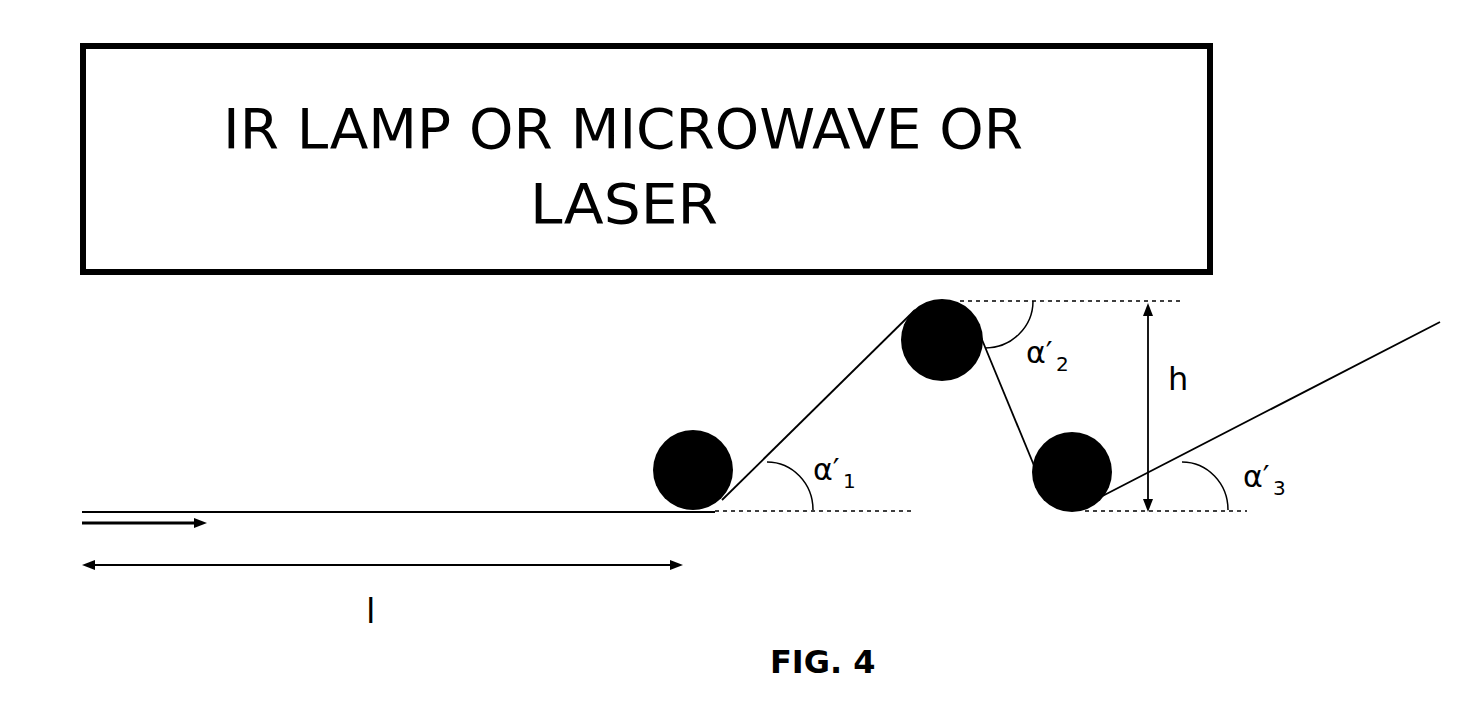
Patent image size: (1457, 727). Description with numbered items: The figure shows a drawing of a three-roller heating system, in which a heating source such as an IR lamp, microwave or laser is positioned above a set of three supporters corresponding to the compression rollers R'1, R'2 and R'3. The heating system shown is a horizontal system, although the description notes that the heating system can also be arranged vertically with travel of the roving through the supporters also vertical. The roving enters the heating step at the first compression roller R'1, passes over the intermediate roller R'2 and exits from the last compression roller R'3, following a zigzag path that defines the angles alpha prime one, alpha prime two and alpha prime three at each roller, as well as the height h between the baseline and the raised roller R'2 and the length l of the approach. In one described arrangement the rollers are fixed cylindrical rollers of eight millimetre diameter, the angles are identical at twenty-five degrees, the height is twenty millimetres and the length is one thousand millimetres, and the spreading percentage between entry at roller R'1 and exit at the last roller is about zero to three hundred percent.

The first compression roller R'1 is at (693, 447).
The compression roller R'2 is at (942, 369).
The compression roller R'3 is at (1072, 452).